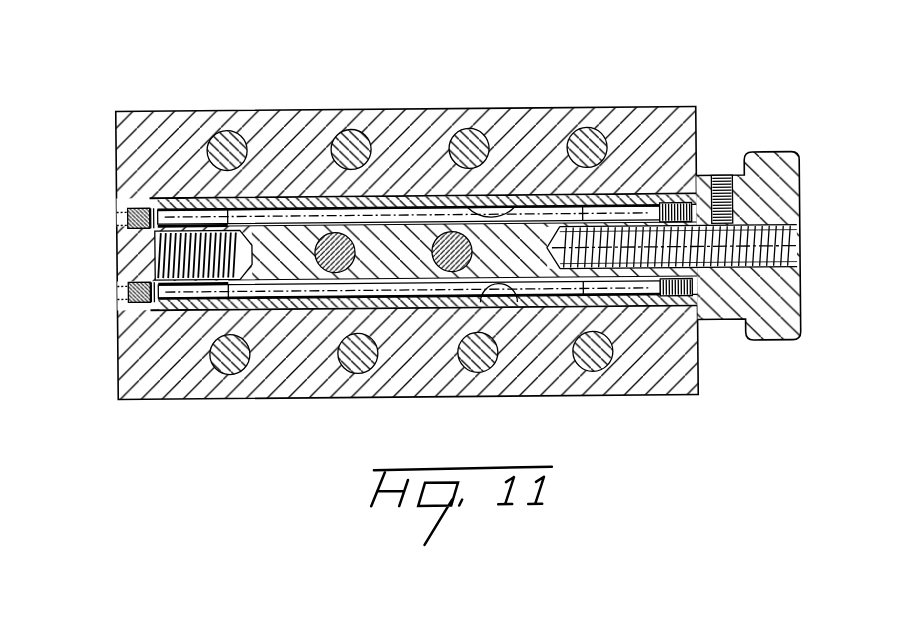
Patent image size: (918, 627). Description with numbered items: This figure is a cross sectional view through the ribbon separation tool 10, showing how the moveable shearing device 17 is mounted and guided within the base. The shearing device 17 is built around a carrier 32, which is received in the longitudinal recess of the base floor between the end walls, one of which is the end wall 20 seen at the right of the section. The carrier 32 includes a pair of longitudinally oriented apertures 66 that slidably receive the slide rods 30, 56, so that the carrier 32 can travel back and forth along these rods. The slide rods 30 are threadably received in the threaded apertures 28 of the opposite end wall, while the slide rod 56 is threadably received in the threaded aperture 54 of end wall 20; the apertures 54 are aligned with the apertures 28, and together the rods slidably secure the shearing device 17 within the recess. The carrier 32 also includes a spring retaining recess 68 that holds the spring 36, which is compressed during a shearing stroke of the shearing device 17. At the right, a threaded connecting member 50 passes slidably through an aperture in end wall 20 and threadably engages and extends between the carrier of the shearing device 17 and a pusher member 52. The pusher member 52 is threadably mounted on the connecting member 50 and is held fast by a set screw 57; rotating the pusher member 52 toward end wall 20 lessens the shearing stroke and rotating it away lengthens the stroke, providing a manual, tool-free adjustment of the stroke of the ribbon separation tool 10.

The ribbon separation tool 10 is at (165, 74).
The end wall 20 is at (698, 137).
The moveable shearing device 17 is at (412, 228).
The threaded apertures 28 is at (173, 312).
The carrier 32 is at (308, 308).
The longitudinally oriented apertures 66 is at (494, 209).
The spring retaining recess 68 is at (253, 240).
The spring 36 is at (160, 259).
The slide rods 30 is at (177, 210).
The slide rod 56 is at (658, 297).
The threaded apertures 54 is at (698, 289).
The pusher member 52 is at (799, 205).
The set screw 57 is at (722, 178).
The threaded connecting member 50 is at (766, 243).